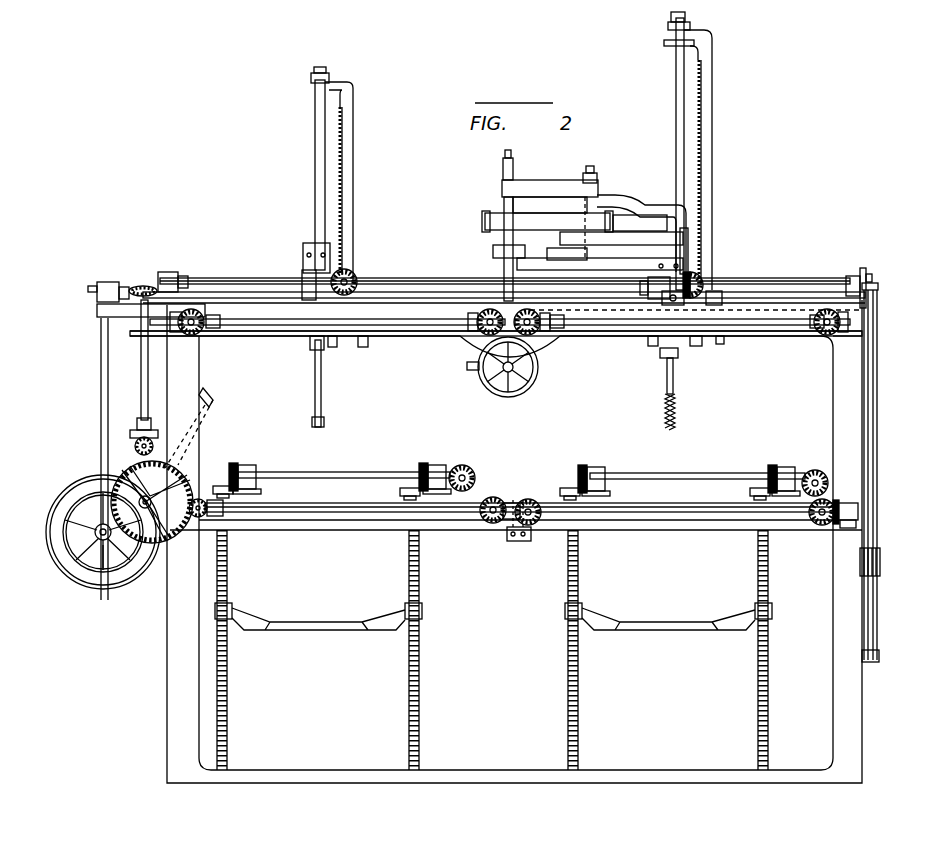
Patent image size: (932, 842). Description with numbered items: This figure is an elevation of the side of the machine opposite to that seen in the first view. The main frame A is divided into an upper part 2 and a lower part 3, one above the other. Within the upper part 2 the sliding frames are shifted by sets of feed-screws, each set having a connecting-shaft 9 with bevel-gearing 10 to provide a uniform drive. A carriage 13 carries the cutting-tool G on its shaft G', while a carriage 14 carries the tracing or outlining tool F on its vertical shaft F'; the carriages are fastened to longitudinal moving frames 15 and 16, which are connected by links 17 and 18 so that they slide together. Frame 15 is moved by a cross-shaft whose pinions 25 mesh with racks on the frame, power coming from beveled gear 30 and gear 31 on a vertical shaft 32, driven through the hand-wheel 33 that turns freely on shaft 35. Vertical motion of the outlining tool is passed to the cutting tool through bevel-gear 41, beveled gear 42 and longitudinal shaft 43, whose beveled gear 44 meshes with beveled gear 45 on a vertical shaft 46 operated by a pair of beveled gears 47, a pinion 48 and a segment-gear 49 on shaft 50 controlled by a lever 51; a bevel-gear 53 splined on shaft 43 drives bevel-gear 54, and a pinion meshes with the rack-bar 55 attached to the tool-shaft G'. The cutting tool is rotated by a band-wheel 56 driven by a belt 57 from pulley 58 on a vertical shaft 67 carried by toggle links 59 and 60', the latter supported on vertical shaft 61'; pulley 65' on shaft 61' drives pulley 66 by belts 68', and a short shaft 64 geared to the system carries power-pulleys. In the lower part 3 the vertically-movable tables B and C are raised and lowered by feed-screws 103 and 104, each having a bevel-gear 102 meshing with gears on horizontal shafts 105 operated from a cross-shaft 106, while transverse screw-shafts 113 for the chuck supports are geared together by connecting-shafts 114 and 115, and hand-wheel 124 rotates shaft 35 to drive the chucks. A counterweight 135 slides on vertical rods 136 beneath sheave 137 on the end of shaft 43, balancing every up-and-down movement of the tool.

The main frame A is at (833, 400).
The upper part of main frame 2 is at (272, 336).
The lower part of main frame 3 is at (275, 524).
The connecting-shaft 9 is at (420, 326).
The bevel-gearing 10 is at (200, 334).
The sliding table or carriage 13 is at (710, 338).
The sliding table or carriage 14 is at (324, 348).
The longitudinal moving frame 15 is at (722, 298).
The longitudinal moving frame 16 is at (302, 285).
The link 17 is at (618, 312).
The link 18 is at (440, 296).
The pinion 25 is at (668, 306).
The beveled gear 30 is at (97, 310).
The gear 31 is at (97, 290).
The vertical shaft 32 is at (91, 459).
The hand-wheel 33 is at (53, 498).
The shaft 35 is at (90, 537).
The bevel-gear 41 is at (352, 274).
The beveled gear 42 is at (340, 262).
The longitudinal shaft 43 is at (400, 295).
The beveled gear 44 is at (162, 272).
The beveled gear 45 is at (138, 286).
The vertical shaft 46 is at (141, 350).
The pair of beveled gears 47 is at (137, 436).
The pinion 48 is at (135, 448).
The segment-gear 49 is at (178, 530).
The shaft 50 is at (150, 500).
The lever 51 is at (212, 398).
The bevel-gear 53 is at (705, 285).
The bevel-gear 54 is at (700, 272).
The rack-bar 55 is at (712, 154).
The band-wheel 56 is at (690, 240).
The belt 57 is at (621, 228).
The pulley 58 is at (567, 258).
The link 59 is at (601, 230).
The link 60' is at (545, 215).
The vertical shaft 61' is at (523, 221).
The short shaft 64 is at (479, 372).
The pulley 65' is at (536, 214).
The pulley 66 is at (640, 226).
The vertical shaft 67 is at (590, 166).
The belts 68' is at (550, 208).
The bevel-gear 102 is at (220, 487).
The feed-screws 103 is at (409, 668).
The feed-screws 104 is at (758, 668).
The horizontal shafts 105 is at (345, 478).
The cross-shaft 106 is at (470, 474).
The screw-shafts 113 is at (520, 541).
The connecting-shaft 114 is at (462, 520).
The connecting-shaft 115 is at (680, 520).
The hand-wheel 124 is at (98, 570).
The counterweight 135 is at (880, 562).
The vertical rods 136 is at (877, 355).
The sheave 137 is at (872, 294).
The vertically-movable table B is at (312, 622).
The vertically-movable table C is at (668, 613).
The tracing or outlining tool F is at (325, 366).
The vertical shaft F' is at (305, 168).
The cutting-tool G is at (682, 389).
The cutting-tool shaft G' is at (663, 151).